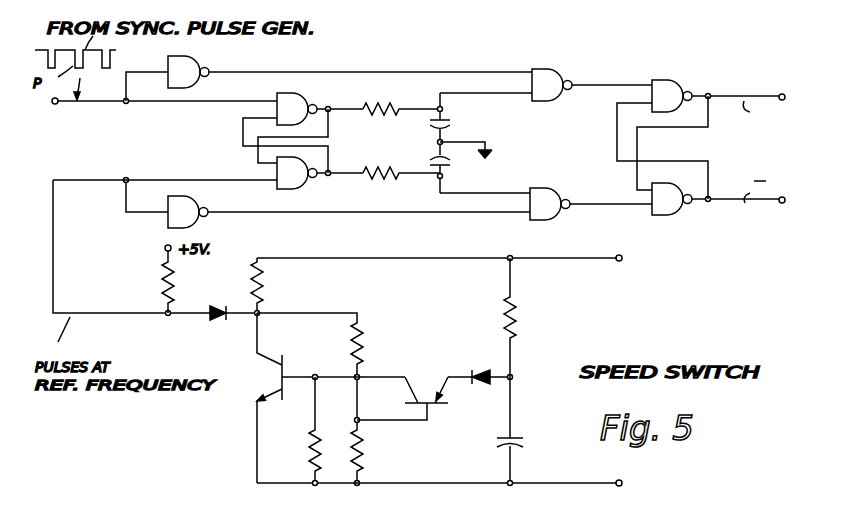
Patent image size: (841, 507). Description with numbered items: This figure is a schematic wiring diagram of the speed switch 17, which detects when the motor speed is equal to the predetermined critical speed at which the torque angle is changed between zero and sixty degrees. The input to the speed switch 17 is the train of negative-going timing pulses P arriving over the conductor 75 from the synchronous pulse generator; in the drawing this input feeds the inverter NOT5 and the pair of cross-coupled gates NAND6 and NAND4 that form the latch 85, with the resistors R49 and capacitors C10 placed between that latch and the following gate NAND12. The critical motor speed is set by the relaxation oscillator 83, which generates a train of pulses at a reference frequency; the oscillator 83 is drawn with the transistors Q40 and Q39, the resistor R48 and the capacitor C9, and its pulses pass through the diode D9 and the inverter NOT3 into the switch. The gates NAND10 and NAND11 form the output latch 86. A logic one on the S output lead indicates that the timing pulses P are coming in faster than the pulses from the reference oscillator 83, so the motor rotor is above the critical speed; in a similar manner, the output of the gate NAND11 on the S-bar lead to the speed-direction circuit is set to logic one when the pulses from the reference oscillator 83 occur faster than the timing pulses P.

The conductor 75 is at (95, 103).
The NAND latch (NAND6/NAND4) 85 is at (279, 140).
The speed switch 17 is at (472, 241).
The NAND latch (NAND10/NAND11) 86 is at (701, 144).
The relaxation oscillator 83 is at (459, 371).
The inverter NOT5 is at (197, 67).
The inverter NOT3 is at (166, 225).
The NAND gate 6 NAND6 is at (301, 96).
The NAND gate 4 NAND4 is at (294, 189).
The NAND gate 12 NAND12 is at (556, 72).
The NAND gate 10 NAND10 is at (676, 80).
The gate NAND11 is at (674, 216).
The resistors R49 is at (377, 118).
The capacitors C10 is at (452, 123).
The diode D9 is at (209, 321).
The transistor Q40 is at (285, 357).
The transistor Q39 is at (441, 418).
The resistor R48 is at (519, 306).
The capacitor C9 is at (519, 435).